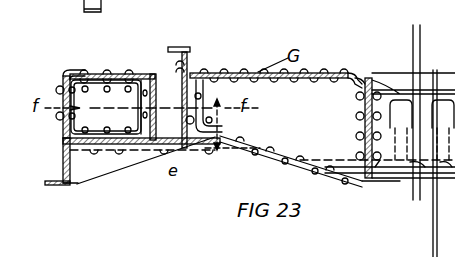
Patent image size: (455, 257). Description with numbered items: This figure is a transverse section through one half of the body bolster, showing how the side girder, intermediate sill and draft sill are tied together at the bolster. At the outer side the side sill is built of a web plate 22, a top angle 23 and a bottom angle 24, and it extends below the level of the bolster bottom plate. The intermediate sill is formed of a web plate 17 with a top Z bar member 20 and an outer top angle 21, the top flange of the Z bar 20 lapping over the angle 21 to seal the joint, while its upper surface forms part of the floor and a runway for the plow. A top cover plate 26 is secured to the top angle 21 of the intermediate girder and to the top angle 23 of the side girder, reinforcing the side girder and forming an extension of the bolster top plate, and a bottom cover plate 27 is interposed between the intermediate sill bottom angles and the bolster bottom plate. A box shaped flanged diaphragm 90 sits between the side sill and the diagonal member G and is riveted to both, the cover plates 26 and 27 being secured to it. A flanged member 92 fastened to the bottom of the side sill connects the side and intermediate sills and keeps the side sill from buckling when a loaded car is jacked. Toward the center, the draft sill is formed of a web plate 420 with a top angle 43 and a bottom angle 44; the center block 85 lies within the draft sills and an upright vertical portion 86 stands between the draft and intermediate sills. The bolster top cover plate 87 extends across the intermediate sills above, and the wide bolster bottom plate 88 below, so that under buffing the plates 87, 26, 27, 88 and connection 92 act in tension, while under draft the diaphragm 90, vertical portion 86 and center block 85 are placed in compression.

The top angle 23 is at (67, 72).
The box shaped flanged diaphragm 90 is at (60, 92).
The web plate 22 is at (64, 142).
The bottom cover plate 27 is at (56, 160).
The bottom angle 24 is at (70, 186).
The top cover plate 26 is at (115, 72).
The outer top angle 21 is at (152, 72).
The web plate 17 is at (186, 50).
The top Z bar member 20 is at (162, 98).
The bolster top cover plate 87 is at (362, 76).
The center block 85 is at (384, 66).
The top angle 43 is at (372, 78).
The draft sill web plate 420 is at (362, 115).
The flanged member 92 is at (122, 160).
The upright vertical portion 86 is at (343, 172).
The bolster bottom plate 88 is at (375, 178).
The bottom angle 44 is at (366, 182).